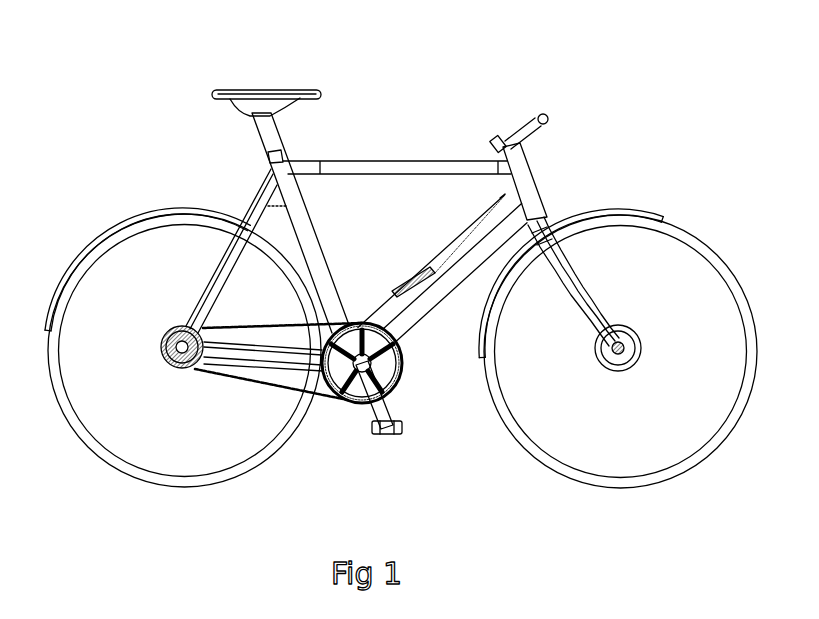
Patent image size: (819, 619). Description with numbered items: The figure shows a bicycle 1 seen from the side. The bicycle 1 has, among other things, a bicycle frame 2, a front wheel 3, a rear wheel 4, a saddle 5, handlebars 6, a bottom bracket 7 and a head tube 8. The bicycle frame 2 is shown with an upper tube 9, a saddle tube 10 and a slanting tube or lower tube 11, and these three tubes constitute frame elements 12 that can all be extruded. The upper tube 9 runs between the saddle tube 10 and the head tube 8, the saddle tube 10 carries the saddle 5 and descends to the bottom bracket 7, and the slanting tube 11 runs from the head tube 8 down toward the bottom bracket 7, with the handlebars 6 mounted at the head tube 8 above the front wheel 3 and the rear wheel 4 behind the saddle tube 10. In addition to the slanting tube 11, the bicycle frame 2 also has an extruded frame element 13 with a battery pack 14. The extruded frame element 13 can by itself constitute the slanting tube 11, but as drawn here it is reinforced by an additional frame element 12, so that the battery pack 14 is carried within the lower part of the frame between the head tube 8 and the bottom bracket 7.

The bicycle 1 is at (731, 106).
The bicycle frame 2 is at (364, 161).
The front wheel 3 is at (720, 253).
The rear wheel 4 is at (123, 470).
The saddle 5 is at (257, 101).
The handlebars 6 is at (543, 112).
The bottom bracket 7 is at (333, 397).
The head tube 8 is at (524, 173).
The upper tube 9 is at (328, 161).
The saddle tube 10 is at (258, 198).
The slanting tube 11 is at (422, 311).
The frame element 12 is at (371, 277).
The extruded frame element 13 is at (378, 302).
The battery pack 14 is at (478, 217).